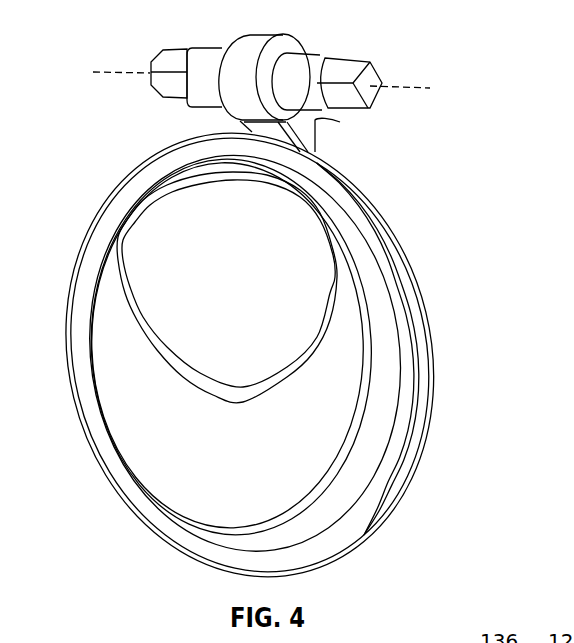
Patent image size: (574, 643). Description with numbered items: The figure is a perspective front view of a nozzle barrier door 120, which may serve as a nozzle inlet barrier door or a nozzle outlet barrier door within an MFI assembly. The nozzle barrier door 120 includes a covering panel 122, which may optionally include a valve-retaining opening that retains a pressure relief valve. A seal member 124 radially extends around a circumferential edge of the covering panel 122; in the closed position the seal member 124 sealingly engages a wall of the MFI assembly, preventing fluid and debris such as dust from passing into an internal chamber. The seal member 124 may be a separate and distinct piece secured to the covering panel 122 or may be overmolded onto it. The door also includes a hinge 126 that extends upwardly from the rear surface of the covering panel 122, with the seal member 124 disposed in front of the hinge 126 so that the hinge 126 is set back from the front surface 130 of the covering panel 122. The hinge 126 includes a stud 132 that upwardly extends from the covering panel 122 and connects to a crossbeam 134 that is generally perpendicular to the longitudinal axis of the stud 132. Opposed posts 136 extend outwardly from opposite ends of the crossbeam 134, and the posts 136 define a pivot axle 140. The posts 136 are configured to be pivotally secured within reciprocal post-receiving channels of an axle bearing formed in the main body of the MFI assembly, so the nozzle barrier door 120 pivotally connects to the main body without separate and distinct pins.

The nozzle barrier door 120 is at (58, 150).
The covering panel 122 is at (160, 487).
The seal member 124 is at (424, 276).
The hinge 126 is at (318, 142).
The front surface 130 is at (173, 165).
The stud 132 is at (322, 120).
The crossbeam 134 is at (316, 52).
The posts 136 is at (157, 50).
The pivot axle 140 is at (97, 72).